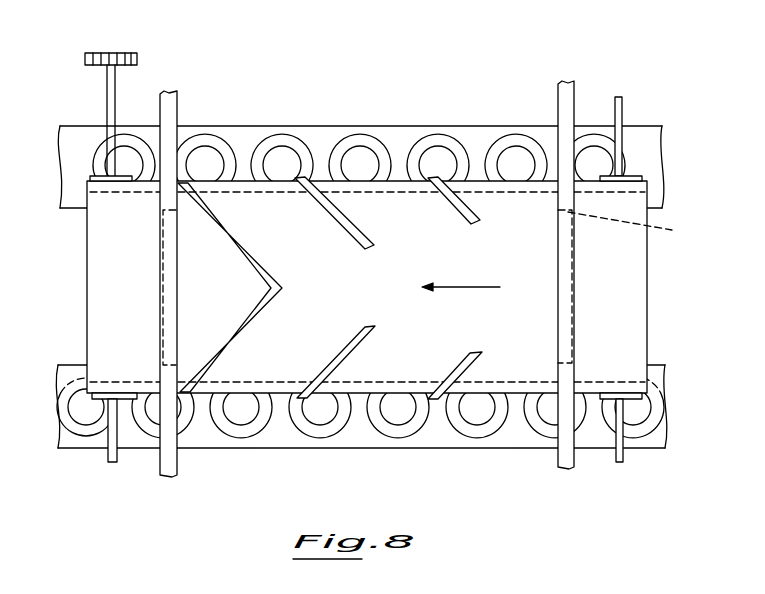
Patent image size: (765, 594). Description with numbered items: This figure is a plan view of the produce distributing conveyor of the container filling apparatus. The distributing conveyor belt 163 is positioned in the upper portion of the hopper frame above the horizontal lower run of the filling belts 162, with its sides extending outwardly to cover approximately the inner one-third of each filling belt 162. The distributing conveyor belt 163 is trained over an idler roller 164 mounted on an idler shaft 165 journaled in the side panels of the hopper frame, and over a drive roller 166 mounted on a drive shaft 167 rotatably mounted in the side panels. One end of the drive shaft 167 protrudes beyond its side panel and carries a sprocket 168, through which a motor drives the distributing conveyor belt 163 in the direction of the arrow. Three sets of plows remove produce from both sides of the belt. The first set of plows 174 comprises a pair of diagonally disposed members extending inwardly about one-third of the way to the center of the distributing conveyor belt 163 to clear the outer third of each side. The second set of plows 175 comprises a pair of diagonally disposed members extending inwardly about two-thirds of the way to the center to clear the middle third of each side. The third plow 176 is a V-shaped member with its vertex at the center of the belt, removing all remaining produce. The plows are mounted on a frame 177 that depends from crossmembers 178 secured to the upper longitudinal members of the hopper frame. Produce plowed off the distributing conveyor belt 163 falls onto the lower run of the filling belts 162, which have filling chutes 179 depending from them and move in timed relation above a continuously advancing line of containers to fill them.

The filling belts 162 is at (360, 127).
The distributing conveyor belt 163 is at (525, 270).
The idler roller 164 is at (632, 178).
The idler shaft 165 is at (620, 112).
The drive roller 166 is at (98, 401).
The drive shaft 167 is at (110, 461).
The sprocket 168 is at (97, 54).
The first set of plows 174 is at (458, 219).
The second set of plows 175 is at (343, 229).
The third plow 176 is at (265, 276).
The frame 177 is at (638, 229).
The crossmembers 178 is at (163, 262).
The filling chutes 179 is at (202, 139).